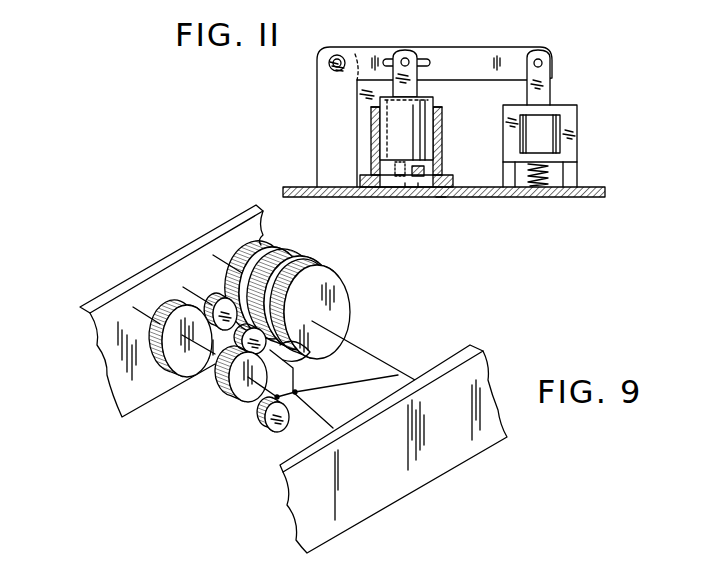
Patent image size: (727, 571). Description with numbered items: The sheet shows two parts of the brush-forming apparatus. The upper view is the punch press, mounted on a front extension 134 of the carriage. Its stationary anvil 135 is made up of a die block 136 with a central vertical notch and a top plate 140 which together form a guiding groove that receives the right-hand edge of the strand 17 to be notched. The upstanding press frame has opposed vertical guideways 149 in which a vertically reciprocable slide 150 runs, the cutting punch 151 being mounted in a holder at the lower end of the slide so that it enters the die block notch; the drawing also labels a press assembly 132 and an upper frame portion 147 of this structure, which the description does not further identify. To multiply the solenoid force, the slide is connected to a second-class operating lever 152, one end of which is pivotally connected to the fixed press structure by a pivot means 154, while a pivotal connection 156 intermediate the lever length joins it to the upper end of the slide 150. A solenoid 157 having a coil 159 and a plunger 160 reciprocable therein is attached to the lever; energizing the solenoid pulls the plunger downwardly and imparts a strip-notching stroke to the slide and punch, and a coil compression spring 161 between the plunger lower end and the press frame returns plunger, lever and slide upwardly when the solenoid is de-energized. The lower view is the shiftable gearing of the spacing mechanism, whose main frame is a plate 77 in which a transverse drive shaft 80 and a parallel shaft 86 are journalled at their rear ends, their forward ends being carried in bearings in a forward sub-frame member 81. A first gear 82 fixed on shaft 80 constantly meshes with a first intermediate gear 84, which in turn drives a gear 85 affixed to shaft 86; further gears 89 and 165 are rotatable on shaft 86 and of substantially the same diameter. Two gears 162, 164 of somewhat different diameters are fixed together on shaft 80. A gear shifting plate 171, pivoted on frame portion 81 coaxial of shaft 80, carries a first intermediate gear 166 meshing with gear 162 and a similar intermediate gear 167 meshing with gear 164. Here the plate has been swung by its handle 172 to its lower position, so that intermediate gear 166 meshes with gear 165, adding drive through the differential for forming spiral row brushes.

In FIG. 11, the strand 17 is at (418, 189).
In FIG. 9, the plate 77 is at (93, 295).
In FIG. 9, the drive shaft 80 is at (150, 309).
In FIG. 9, the forward sub-frame member 81 is at (450, 465).
In FIG. 9, the first gear 82 is at (175, 300).
In FIG. 9, the first intermediate gear 84 is at (218, 300).
In FIG. 9, the gear 85 is at (278, 240).
In FIG. 9, the shaft 86 is at (232, 262).
In FIG. 9, the gear 89 is at (307, 257).
In FIG. 11, the latch assembly 132 is at (449, 95).
In FIG. 11, the front extension 134 is at (496, 198).
In FIG. 11, the anvil 135 is at (437, 201).
In FIG. 11, the die block 136 is at (411, 187).
In FIG. 11, the top plate 140 is at (424, 172).
In FIG. 11, the cylinder rim 147 is at (437, 107).
In FIG. 11, the guideways 149 is at (370, 122).
In FIG. 11, the slide 150 is at (420, 123).
In FIG. 11, the punch 151 is at (400, 178).
In FIG. 11, the operating lever 152 is at (367, 50).
In FIG. 11, the pivot means 154 is at (341, 58).
In FIG. 11, the pivotal connection 156 is at (405, 58).
In FIG. 11, the solenoid 157 is at (570, 119).
In FIG. 11, the coil 159 is at (553, 142).
In FIG. 11, the plunger 160 is at (551, 80).
In FIG. 11, the coil compression spring 161 is at (547, 173).
In FIG. 9, the gear 162 is at (219, 376).
In FIG. 9, the gear 164 is at (227, 395).
In FIG. 9, the gear 165 is at (342, 288).
In FIG. 9, the first intermediate gear 166 is at (306, 360).
In FIG. 9, the intermediate gear 167 is at (273, 429).
In FIG. 9, the plate 171 is at (260, 387).
In FIG. 9, the handle 172 is at (377, 377).